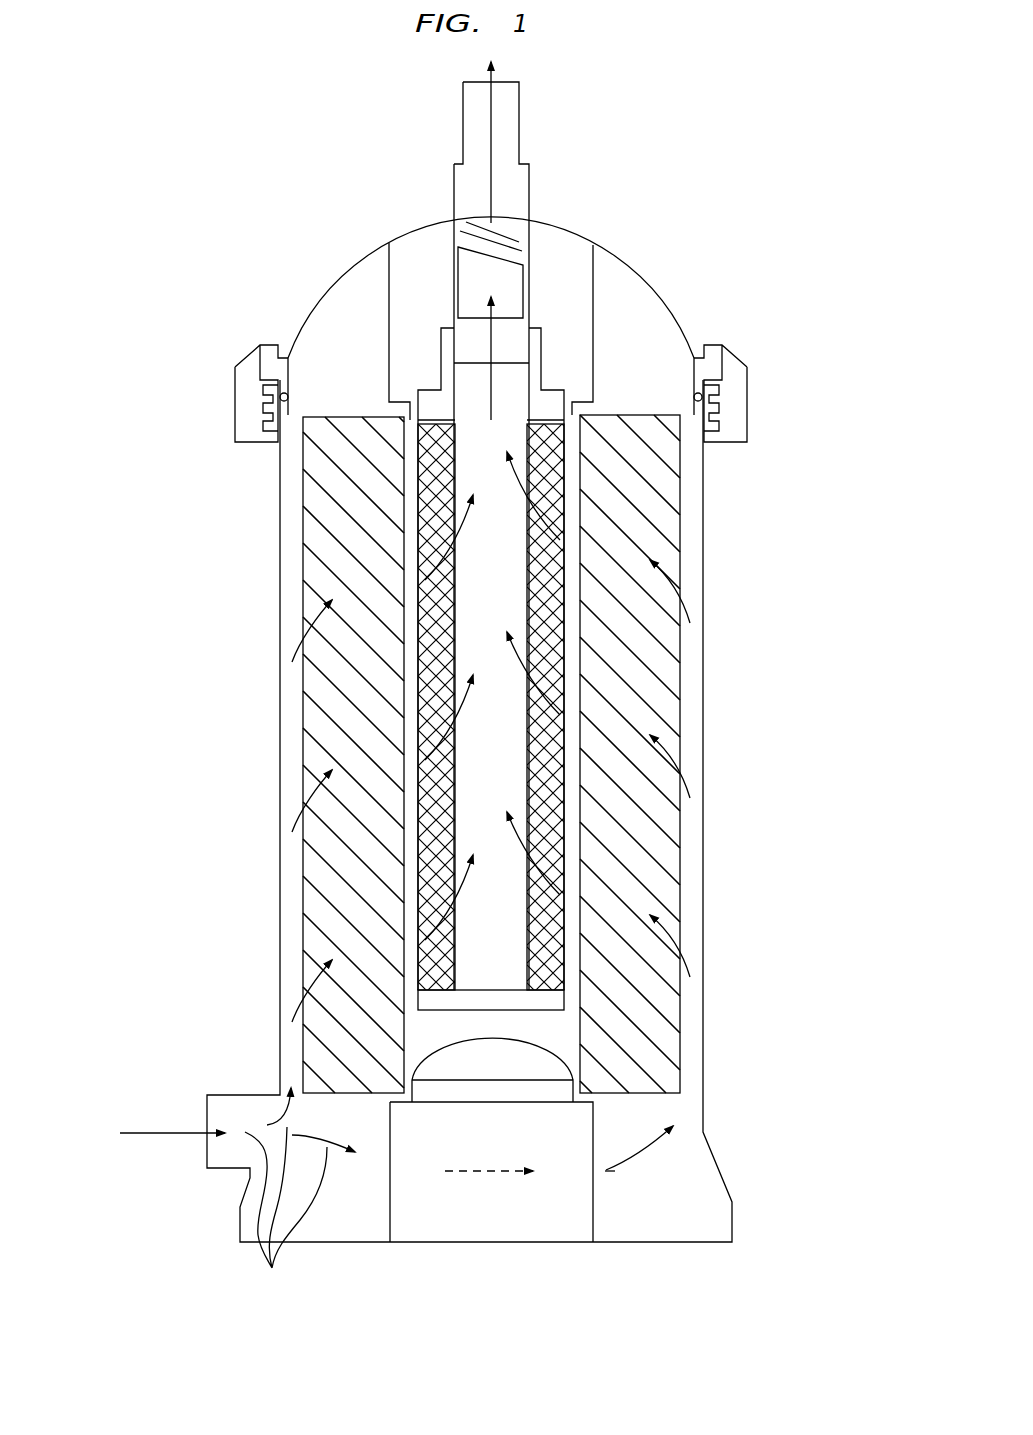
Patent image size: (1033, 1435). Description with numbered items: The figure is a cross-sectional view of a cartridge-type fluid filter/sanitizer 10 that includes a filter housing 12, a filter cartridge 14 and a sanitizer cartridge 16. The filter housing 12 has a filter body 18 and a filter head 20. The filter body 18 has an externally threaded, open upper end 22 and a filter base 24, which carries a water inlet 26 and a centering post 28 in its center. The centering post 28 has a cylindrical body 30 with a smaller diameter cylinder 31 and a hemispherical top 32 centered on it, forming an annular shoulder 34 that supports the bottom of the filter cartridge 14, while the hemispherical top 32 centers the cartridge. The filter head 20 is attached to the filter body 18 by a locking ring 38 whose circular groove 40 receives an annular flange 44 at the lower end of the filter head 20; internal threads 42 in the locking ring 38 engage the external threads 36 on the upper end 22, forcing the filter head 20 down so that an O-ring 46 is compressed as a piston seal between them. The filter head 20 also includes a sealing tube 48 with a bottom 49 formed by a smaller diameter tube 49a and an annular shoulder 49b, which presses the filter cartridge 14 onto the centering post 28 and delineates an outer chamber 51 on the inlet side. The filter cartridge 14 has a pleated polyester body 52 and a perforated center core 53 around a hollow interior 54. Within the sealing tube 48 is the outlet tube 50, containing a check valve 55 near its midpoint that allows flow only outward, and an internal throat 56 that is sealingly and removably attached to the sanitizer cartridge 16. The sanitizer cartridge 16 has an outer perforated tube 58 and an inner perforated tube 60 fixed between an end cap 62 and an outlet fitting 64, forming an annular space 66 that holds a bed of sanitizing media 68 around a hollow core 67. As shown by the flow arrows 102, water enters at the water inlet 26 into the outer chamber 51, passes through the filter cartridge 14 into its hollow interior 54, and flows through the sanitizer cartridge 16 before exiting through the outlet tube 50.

The fluid filter/sanitizer 10 is at (158, 632).
The filter housing 12 is at (712, 718).
The filter cartridge 14 is at (295, 718).
The sanitizer cartridge 16 is at (410, 533).
The filter body 18 is at (712, 822).
The filter head 20 is at (648, 268).
The upper end 22 is at (703, 547).
The filter base 24 is at (712, 1150).
The water inlet 26 is at (207, 1145).
The centering post 28 is at (385, 1197).
The cylindrical body 30 is at (480, 1195).
The smaller diameter cylinder 31 is at (520, 1268).
The hemispherical top 32 is at (445, 1063).
The annular shoulder 34 is at (520, 1088).
The external threads 36 is at (700, 415).
The locking ring 38 is at (760, 409).
The circular groove 40 is at (745, 360).
The internal threads 42 is at (268, 430).
The annular flange 44 is at (268, 357).
The O-ring 46 is at (270, 385).
The sealing tube 48 is at (593, 270).
The bottom 49 is at (385, 400).
The smaller diameter tube 49a is at (590, 408).
The annular shoulder 49b is at (572, 405).
The outlet tube 50 is at (454, 187).
The outer chamber 51 is at (676, 1210).
The polyester body 52 is at (400, 880).
The center core 53 is at (400, 790).
The hollow interior 54 is at (427, 1028).
The check valve 55 is at (495, 255).
The internal throat 56 is at (472, 350).
The outer perforated tube 58 is at (562, 617).
The inner perforated tube 60 is at (540, 648).
The end cap 62 is at (545, 1003).
The outlet fitting 64 is at (447, 348).
The annular space 66 is at (422, 572).
The hollow core 67 is at (543, 872).
The sanitizing media 68 is at (430, 612).
The flow arrows 102 is at (272, 1268).